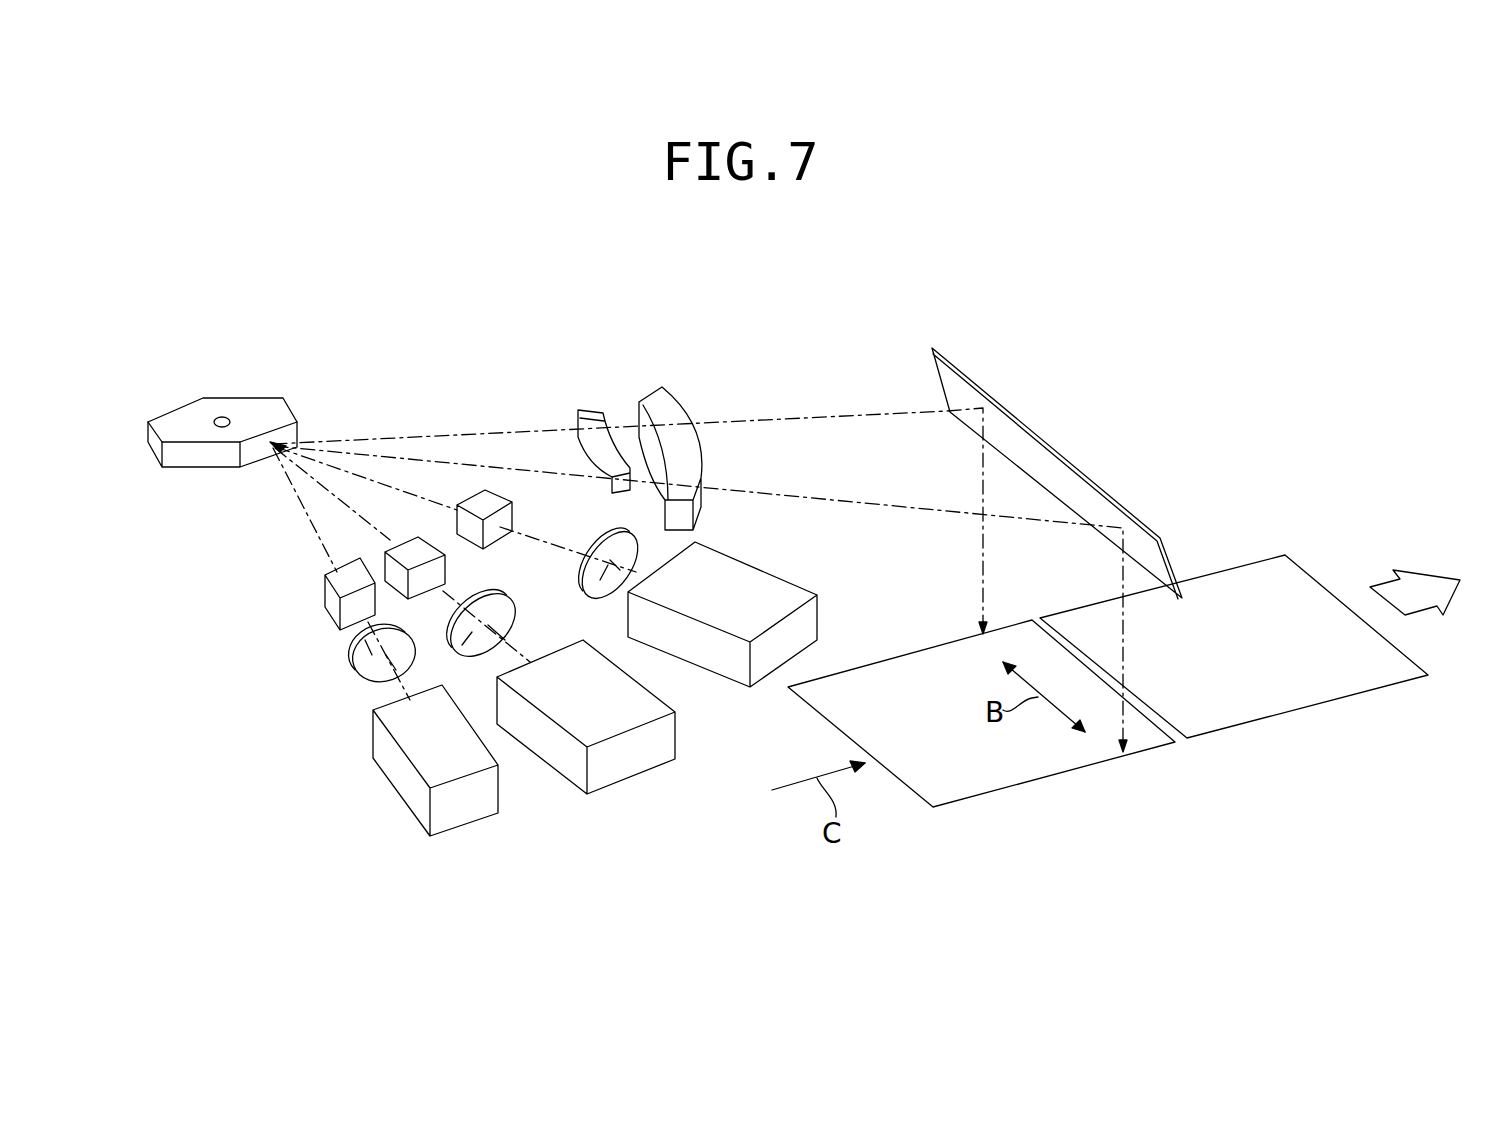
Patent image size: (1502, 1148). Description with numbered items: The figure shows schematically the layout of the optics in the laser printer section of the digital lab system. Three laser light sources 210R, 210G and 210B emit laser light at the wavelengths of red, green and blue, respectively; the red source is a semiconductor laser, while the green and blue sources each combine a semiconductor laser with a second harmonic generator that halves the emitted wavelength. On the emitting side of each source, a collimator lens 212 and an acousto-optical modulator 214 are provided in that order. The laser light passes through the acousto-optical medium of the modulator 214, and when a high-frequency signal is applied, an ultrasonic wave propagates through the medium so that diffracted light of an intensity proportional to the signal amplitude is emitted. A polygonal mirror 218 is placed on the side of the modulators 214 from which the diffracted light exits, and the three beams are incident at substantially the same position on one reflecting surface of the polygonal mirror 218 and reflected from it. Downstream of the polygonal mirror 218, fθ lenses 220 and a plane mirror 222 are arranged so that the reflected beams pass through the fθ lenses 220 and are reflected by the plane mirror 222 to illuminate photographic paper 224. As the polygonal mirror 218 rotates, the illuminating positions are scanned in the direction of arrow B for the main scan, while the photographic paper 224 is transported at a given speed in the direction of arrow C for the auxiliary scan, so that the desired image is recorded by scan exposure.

The laser light source 210R is at (465, 805).
The laser light source 210G is at (623, 757).
The laser light source 210B is at (722, 648).
The collimator lens 212 is at (362, 675).
The acousto-optical modulator 214 is at (326, 605).
The polygonal mirror 218 is at (258, 417).
The fθ lens 220 is at (664, 397).
The plane mirror 222 is at (1083, 473).
The photographic paper 224 is at (970, 765).